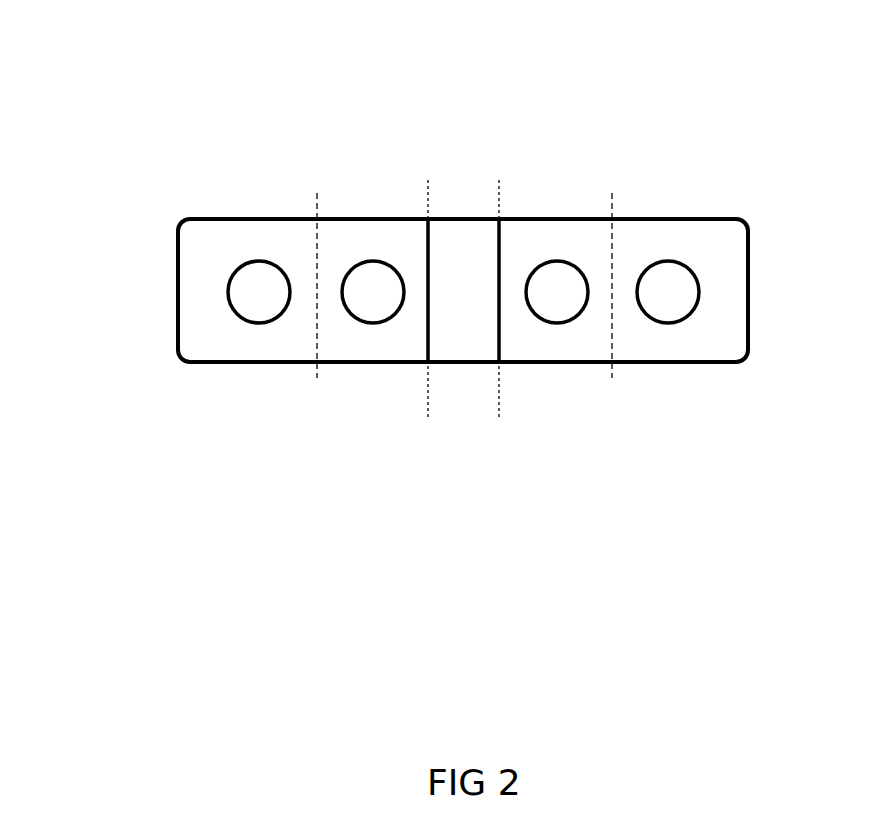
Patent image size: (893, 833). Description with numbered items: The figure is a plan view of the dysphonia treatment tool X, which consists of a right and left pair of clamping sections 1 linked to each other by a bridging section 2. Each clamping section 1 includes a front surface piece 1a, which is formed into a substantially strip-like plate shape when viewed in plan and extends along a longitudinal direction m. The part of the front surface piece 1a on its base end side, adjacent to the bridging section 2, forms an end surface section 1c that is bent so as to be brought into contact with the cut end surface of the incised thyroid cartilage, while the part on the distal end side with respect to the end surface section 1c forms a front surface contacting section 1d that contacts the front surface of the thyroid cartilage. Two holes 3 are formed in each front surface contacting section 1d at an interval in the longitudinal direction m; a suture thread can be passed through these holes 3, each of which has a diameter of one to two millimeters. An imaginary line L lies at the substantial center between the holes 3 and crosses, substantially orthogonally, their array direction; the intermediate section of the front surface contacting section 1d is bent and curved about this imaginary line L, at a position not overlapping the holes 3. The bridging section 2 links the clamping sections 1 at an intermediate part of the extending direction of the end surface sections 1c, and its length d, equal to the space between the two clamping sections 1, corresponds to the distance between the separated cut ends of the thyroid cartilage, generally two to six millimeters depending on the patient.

The clamping section 1 is at (283, 224).
The front surface piece 1a is at (410, 606).
The end surface section 1c is at (433, 342).
The front surface contacting section 1d is at (298, 350).
The bridging section 2 is at (465, 218).
The hole 3 is at (238, 283).
The imaginary line L is at (318, 207).
The longitudinal direction m is at (310, 53).
The length of the bridging section d is at (496, 287).
The dysphonia treatment tool X is at (698, 99).